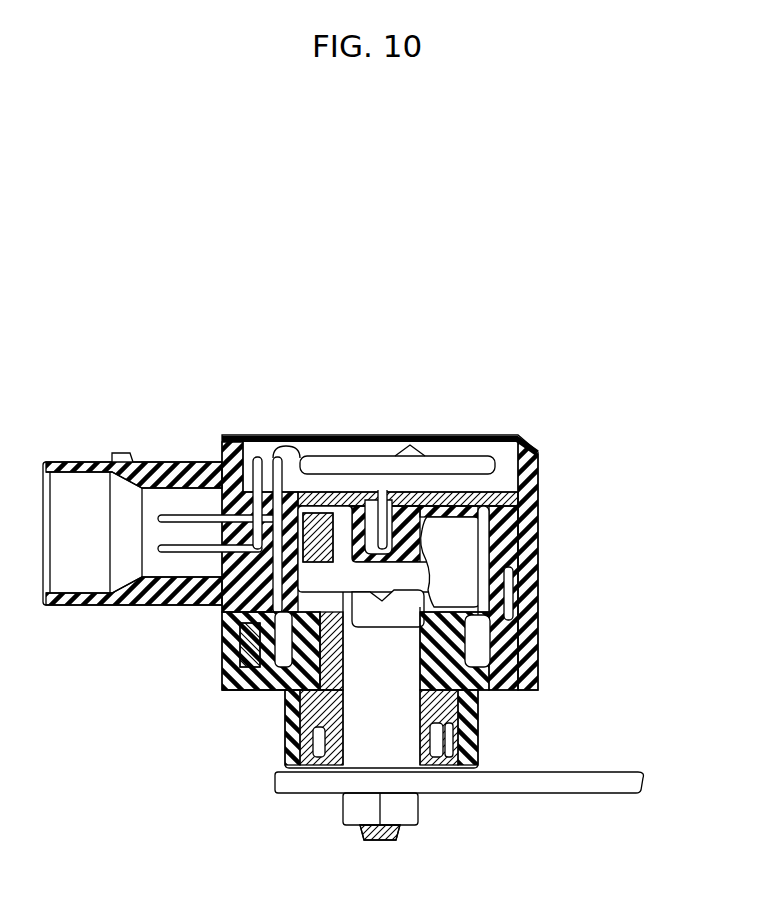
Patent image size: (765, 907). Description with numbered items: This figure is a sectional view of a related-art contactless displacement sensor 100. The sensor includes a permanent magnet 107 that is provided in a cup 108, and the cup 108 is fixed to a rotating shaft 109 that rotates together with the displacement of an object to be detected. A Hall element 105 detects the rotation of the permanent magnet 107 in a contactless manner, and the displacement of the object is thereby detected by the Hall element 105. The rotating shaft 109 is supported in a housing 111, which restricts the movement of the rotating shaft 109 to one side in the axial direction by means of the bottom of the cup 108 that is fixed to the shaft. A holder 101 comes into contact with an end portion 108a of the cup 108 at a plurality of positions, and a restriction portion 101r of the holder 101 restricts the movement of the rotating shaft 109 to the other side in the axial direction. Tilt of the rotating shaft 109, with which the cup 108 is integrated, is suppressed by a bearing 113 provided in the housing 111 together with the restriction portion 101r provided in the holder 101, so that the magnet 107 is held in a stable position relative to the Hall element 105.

The contactless displacement sensor 100 is at (228, 272).
The holder 101 is at (187, 470).
The restriction portion 101r is at (468, 510).
The Hall element 105 is at (357, 452).
The permanent magnet 107 is at (298, 538).
The cup 108 is at (223, 673).
The end portion 108a is at (465, 522).
The rotating shaft 109 is at (380, 717).
The housing 111 is at (288, 690).
The bearing 113 is at (430, 655).